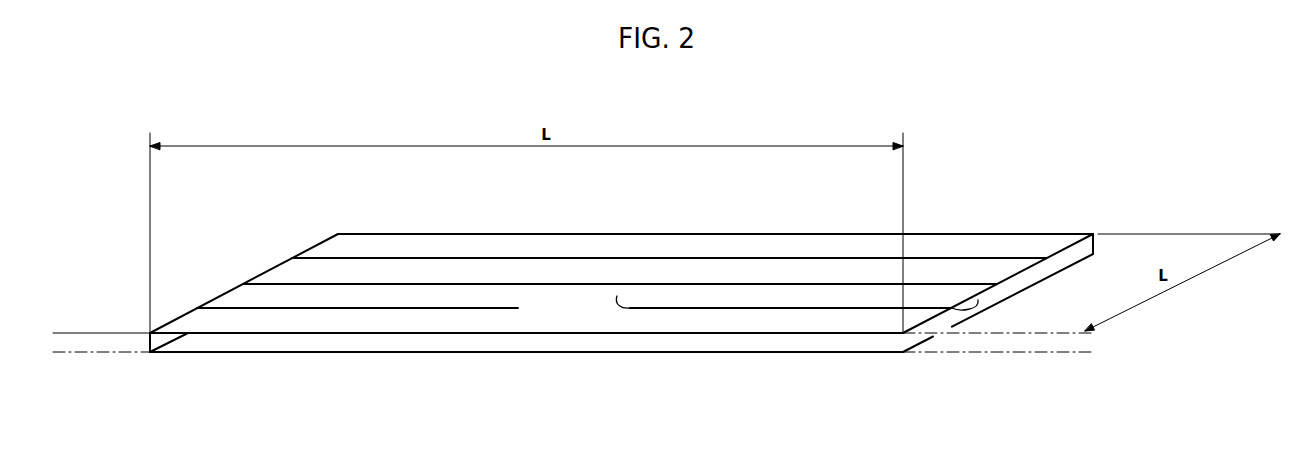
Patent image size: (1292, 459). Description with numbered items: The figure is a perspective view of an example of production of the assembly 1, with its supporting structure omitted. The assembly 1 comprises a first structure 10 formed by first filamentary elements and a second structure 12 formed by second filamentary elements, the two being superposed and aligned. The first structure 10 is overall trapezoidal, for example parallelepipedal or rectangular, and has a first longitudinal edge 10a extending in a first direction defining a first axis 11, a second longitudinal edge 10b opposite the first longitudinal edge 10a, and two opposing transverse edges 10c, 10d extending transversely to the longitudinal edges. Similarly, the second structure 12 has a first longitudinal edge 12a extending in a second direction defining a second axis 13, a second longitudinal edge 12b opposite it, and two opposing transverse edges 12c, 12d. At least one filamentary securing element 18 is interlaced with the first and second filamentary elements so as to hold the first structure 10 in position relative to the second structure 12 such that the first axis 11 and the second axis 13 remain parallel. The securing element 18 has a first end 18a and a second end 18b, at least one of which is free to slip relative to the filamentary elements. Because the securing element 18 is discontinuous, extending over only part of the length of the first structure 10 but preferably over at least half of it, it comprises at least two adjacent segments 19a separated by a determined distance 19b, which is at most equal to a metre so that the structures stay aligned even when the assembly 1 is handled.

The assembly 1 is at (822, 98).
The first structure 10 is at (625, 284).
The first longitudinal edge 10a is at (477, 334).
The second longitudinal edge 10b is at (1033, 234).
The transverse edge 10c is at (266, 267).
The transverse edge 10d is at (1023, 270).
The first axis 11 is at (72, 332).
The second structure 12 is at (620, 325).
The first longitudinal edge 12a is at (517, 353).
The second longitudinal edge 12b is at (1093, 256).
The transverse edge 12c is at (152, 342).
The transverse edge 12d is at (1013, 298).
The second axis 13 is at (70, 354).
The filamentary securing element 18 is at (504, 292).
The first end 18a is at (193, 307).
The second end 18b is at (519, 307).
The segments 19a is at (350, 292).
The distance 19b is at (575, 301).